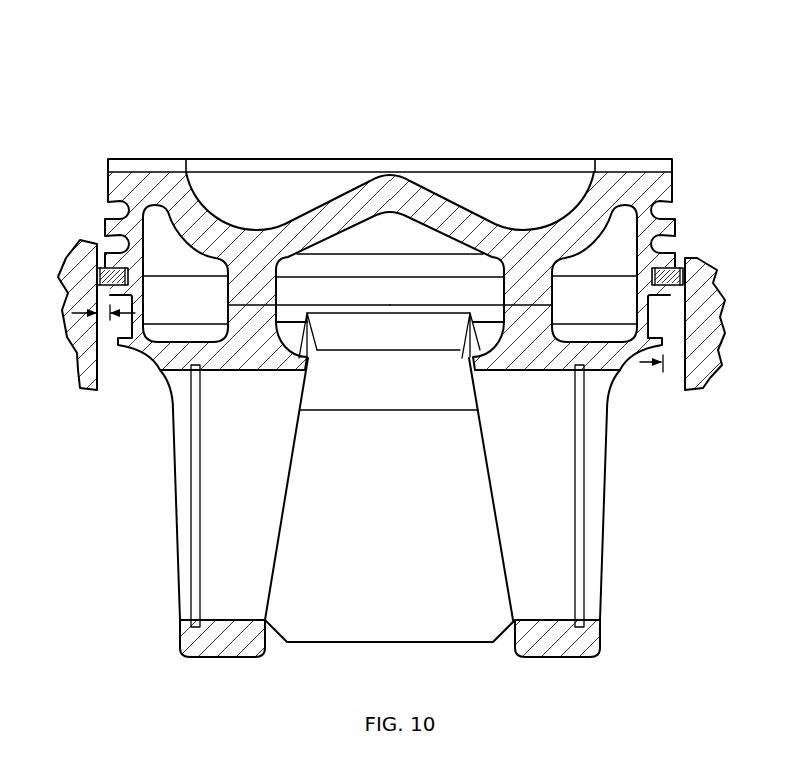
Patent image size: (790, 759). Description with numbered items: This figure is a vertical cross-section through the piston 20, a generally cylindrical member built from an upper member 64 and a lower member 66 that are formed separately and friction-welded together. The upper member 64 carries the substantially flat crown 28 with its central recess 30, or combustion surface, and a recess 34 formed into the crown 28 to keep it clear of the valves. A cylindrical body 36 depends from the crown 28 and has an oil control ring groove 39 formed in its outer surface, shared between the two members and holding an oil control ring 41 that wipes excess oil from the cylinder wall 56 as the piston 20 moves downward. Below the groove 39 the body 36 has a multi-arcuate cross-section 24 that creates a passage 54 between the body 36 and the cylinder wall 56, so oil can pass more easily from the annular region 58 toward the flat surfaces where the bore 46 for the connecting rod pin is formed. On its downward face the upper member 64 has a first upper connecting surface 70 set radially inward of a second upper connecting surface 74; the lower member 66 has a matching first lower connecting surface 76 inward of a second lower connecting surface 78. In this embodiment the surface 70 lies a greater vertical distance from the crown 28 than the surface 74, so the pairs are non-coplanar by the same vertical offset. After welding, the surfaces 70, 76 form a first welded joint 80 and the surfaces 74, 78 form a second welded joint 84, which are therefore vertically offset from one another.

The piston 20 is at (697, 104).
The multi-arcuate cross-section 24 is at (107, 350).
The crown 28 is at (548, 158).
The central recess 30 is at (473, 208).
The recess 34 is at (627, 160).
The cylindrical body 36 is at (673, 190).
The oil control ring groove 39 is at (95, 275).
The oil control ring 41 is at (95, 266).
The bore 46 is at (160, 501).
The passage 54 is at (690, 362).
The cylinder wall 56 is at (99, 391).
The annular region 58 is at (100, 315).
The upper member 64 is at (115, 188).
The lower member 66 is at (200, 641).
The first upper connecting surface 70 is at (246, 301).
The second upper connecting surface 74 is at (135, 270).
The first lower connecting surface 76 is at (517, 311).
The second lower connecting surface 78 is at (136, 284).
The first welded joint 80 is at (541, 311).
The second welded joint 84 is at (650, 272).